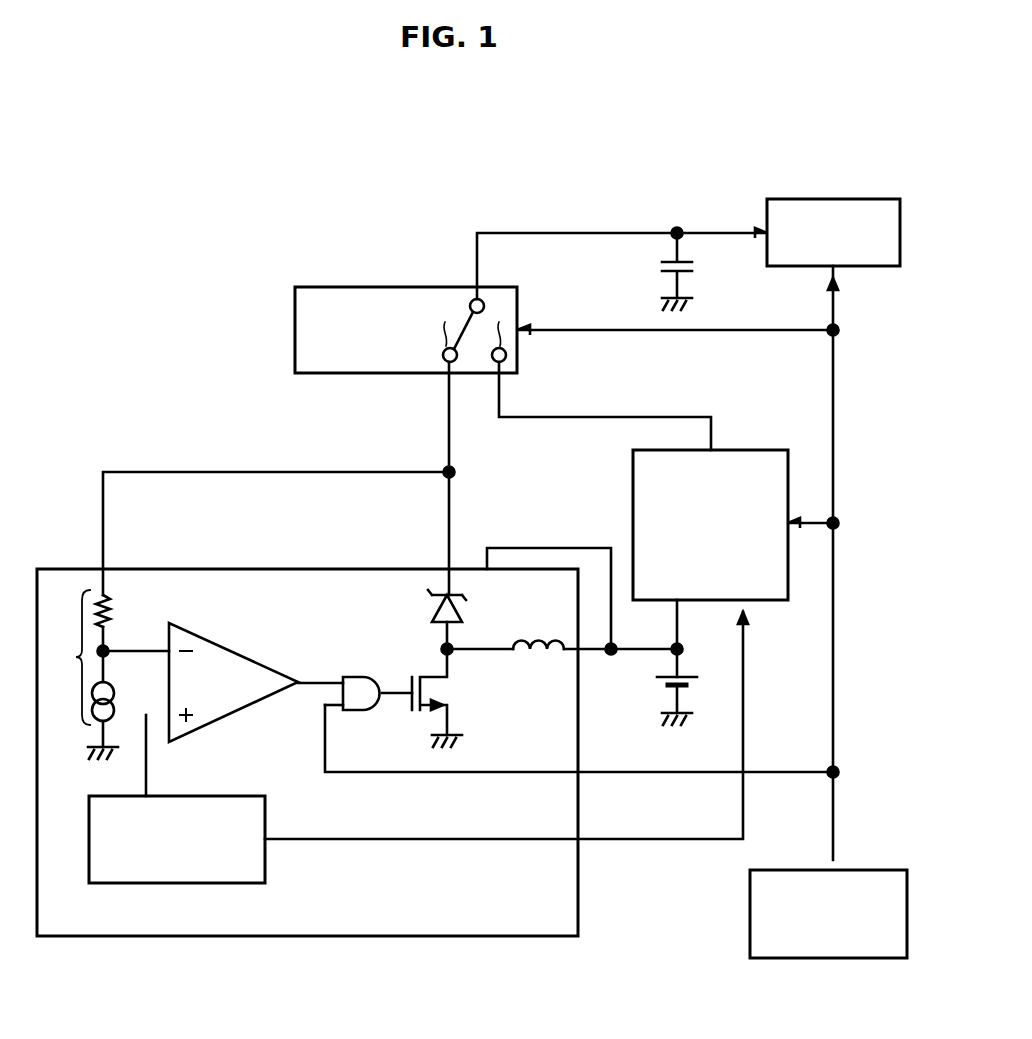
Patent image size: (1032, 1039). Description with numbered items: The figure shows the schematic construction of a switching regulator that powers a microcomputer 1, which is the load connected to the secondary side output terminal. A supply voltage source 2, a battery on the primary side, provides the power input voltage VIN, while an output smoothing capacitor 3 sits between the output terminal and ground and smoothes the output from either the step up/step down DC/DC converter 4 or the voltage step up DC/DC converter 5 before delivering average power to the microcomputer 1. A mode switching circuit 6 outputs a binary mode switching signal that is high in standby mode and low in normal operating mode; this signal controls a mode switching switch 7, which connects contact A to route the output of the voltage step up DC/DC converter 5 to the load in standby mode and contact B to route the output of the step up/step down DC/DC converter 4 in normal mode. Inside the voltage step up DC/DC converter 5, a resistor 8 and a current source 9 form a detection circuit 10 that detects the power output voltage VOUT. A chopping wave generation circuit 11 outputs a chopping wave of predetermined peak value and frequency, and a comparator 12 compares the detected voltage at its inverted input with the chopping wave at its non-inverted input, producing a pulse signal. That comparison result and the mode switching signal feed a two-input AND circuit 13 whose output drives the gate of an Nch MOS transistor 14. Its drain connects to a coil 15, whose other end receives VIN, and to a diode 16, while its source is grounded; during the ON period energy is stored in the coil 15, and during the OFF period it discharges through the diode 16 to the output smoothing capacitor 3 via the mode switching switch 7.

The microcomputer 1 is at (787, 210).
The supply voltage source 2 is at (657, 682).
The output smoothing capacitor 3 is at (660, 264).
The step up/step down DC/DC converter 4 is at (764, 458).
The voltage step up DC/DC converter 5 is at (57, 569).
The mode switching circuit 6 is at (758, 903).
The mode switching switch 7 is at (403, 287).
The resistor 8 is at (112, 620).
The current source 9 is at (114, 697).
The detection circuit 10 is at (65, 657).
The chopping wave generation circuit 11 is at (267, 826).
The comparator 12 is at (230, 662).
The AND circuit 13 is at (360, 680).
The MOS transistor 14 is at (445, 693).
The coil 15 is at (530, 656).
The diode 16 is at (455, 612).